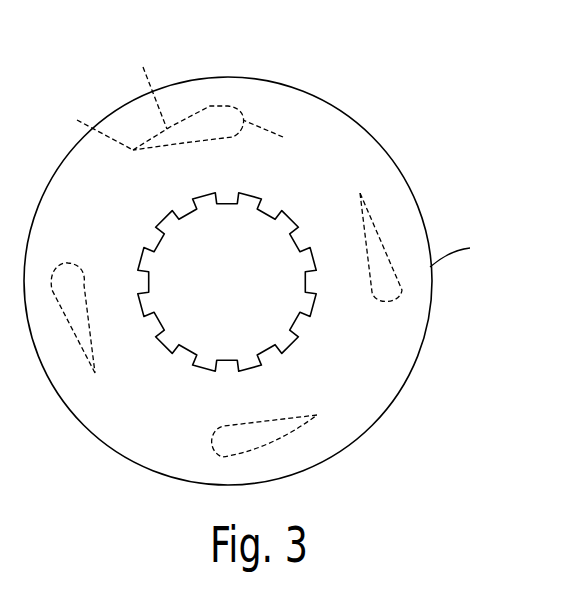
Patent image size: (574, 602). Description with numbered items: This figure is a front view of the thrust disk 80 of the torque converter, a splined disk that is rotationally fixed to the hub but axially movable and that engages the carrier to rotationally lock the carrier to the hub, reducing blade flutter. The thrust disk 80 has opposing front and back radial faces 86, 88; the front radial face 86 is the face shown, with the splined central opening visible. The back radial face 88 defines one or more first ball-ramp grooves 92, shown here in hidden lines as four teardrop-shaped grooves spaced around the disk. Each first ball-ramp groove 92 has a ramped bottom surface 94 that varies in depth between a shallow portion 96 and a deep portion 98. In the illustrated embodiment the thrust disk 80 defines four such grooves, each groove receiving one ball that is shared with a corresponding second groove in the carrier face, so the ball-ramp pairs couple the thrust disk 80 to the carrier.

The thrust disk 80 is at (302, 92).
The front radial face 86 is at (388, 370).
The back radial face 88 is at (462, 251).
The first ball-ramp groove 92 is at (210, 105).
The ramped bottom surface 94 is at (150, 83).
The shallow portion 96 is at (93, 127).
The deep portion 98 is at (274, 137).